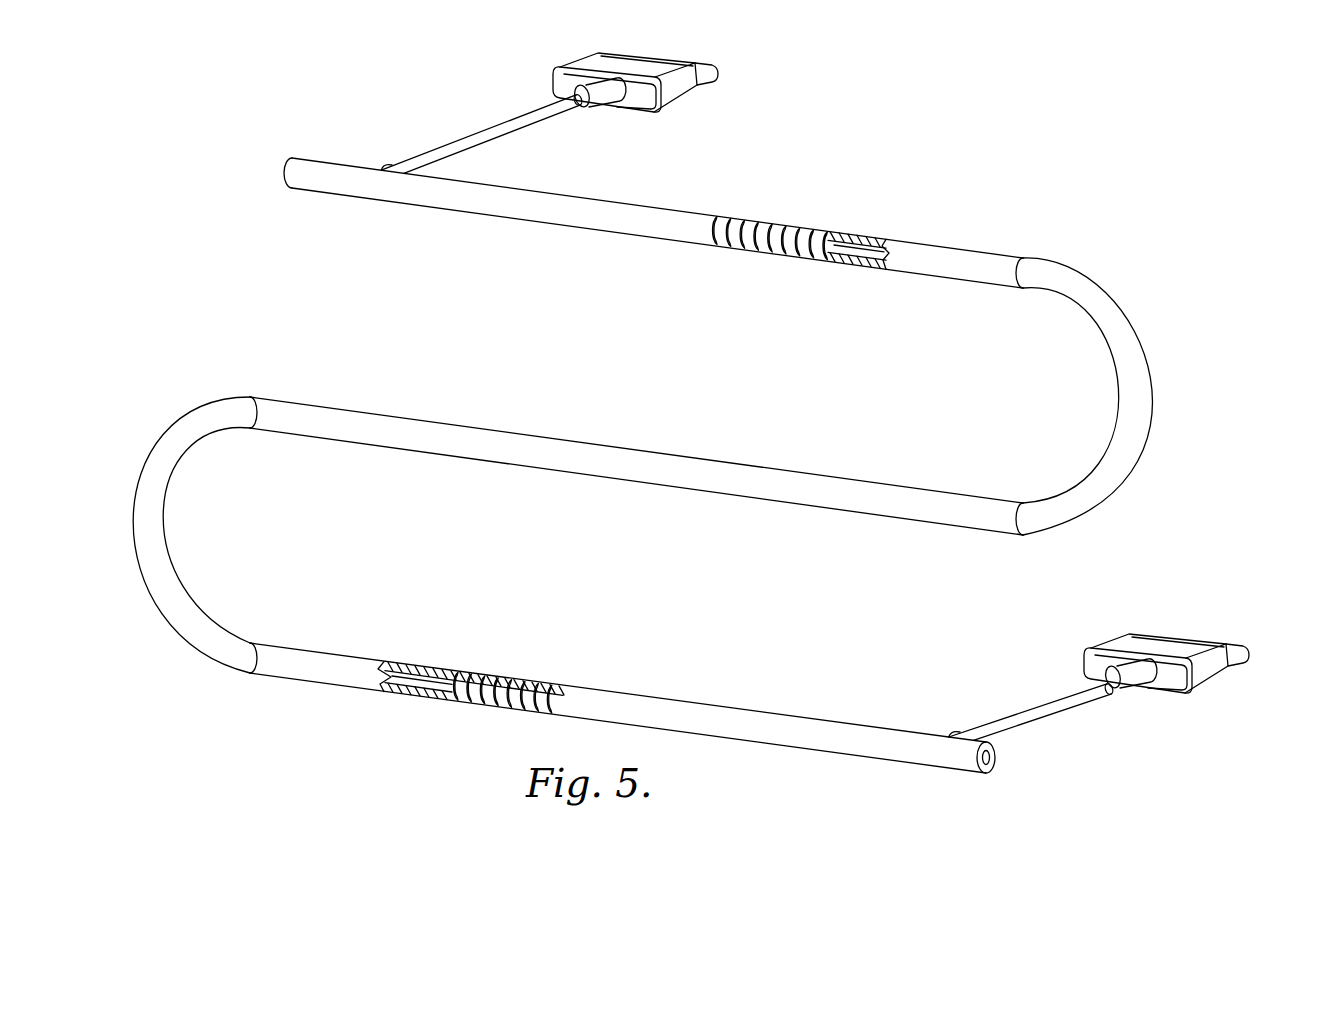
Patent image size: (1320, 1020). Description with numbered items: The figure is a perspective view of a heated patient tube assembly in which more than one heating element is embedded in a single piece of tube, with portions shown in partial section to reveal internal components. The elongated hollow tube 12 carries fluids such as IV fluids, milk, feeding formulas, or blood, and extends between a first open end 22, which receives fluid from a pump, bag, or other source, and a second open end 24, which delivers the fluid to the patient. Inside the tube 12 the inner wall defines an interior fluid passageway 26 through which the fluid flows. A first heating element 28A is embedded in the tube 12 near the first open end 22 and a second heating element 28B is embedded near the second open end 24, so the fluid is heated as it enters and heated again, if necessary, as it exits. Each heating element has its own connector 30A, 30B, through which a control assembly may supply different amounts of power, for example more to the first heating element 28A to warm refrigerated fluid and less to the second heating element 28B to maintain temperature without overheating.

The tube 12 is at (1002, 260).
The first open end 22 is at (266, 161).
The second open end 24 is at (1018, 764).
The interior fluid passageway 26 is at (858, 248).
The first heating element 28A is at (815, 230).
The second heating element 28B is at (540, 683).
The connector 30A is at (683, 82).
The connector 30B is at (1170, 648).